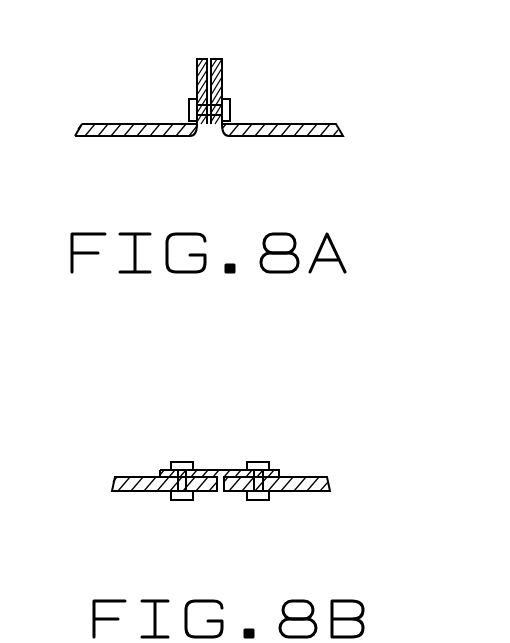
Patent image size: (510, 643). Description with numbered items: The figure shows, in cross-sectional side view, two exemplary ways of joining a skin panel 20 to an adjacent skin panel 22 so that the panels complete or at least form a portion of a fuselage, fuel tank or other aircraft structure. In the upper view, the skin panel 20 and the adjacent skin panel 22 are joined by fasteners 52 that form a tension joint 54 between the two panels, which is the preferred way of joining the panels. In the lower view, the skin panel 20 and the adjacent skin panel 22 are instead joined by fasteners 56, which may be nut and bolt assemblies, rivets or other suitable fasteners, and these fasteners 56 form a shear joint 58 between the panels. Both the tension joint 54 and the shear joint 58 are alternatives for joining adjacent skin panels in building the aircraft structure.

In FIG. 8A, the skin panel 20 is at (140, 137).
In FIG. 8B, the skin panel 20 is at (148, 492).
In FIG. 8A, the adjacent skin panels 22 is at (280, 137).
In FIG. 8B, the adjacent skin panels 22 is at (304, 492).
In FIG. 8A, the fasteners 52 is at (230, 99).
In FIG. 8A, the tension joints 54 is at (160, 68).
In FIG. 8B, the fasteners 56 is at (183, 461).
In FIG. 8B, the shear joints 58 is at (120, 436).